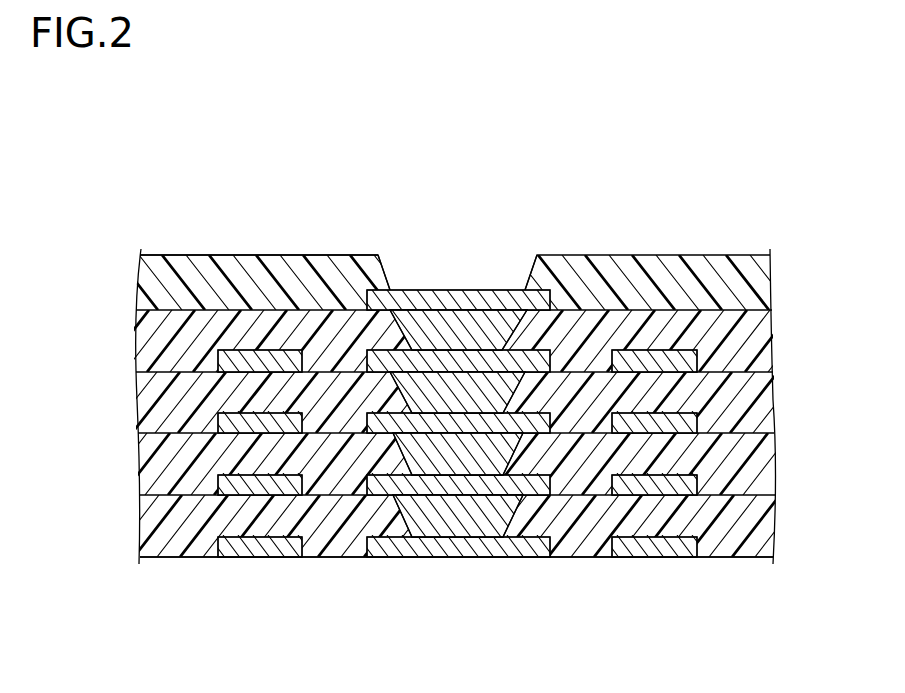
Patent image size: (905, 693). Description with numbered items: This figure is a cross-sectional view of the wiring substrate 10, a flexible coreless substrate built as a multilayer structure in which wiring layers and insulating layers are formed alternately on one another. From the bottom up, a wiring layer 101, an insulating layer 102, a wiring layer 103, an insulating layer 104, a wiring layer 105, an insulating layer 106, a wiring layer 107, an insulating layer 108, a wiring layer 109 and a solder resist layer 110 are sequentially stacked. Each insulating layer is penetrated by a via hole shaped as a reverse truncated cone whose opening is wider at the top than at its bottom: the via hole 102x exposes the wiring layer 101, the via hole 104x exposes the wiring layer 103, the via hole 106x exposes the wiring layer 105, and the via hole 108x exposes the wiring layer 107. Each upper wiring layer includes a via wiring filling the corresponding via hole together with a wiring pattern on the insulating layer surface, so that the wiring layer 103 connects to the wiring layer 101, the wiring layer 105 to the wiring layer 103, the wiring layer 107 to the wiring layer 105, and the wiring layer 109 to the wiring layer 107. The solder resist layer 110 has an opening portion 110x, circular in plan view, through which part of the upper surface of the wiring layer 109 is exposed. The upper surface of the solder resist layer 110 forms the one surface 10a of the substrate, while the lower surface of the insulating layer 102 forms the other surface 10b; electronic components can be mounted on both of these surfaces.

The wiring substrate 10 is at (167, 229).
The one surface 10a is at (234, 255).
The other surface 10b is at (189, 558).
The wiring layer 101 is at (690, 545).
The insulating layer 102 is at (752, 515).
The via hole 102x is at (410, 517).
The wiring layer 103 is at (690, 486).
The insulating layer 104 is at (752, 453).
The via hole 104x is at (463, 488).
The wiring layer 105 is at (690, 424).
The insulating layer 106 is at (755, 393).
The via hole 106x is at (410, 393).
The wiring layer 107 is at (690, 362).
The insulating layer 108 is at (755, 331).
The via hole 108x is at (410, 338).
The wiring layer 109 is at (537, 300).
The solder resist layer 110 is at (753, 271).
The opening portion 110x is at (523, 268).